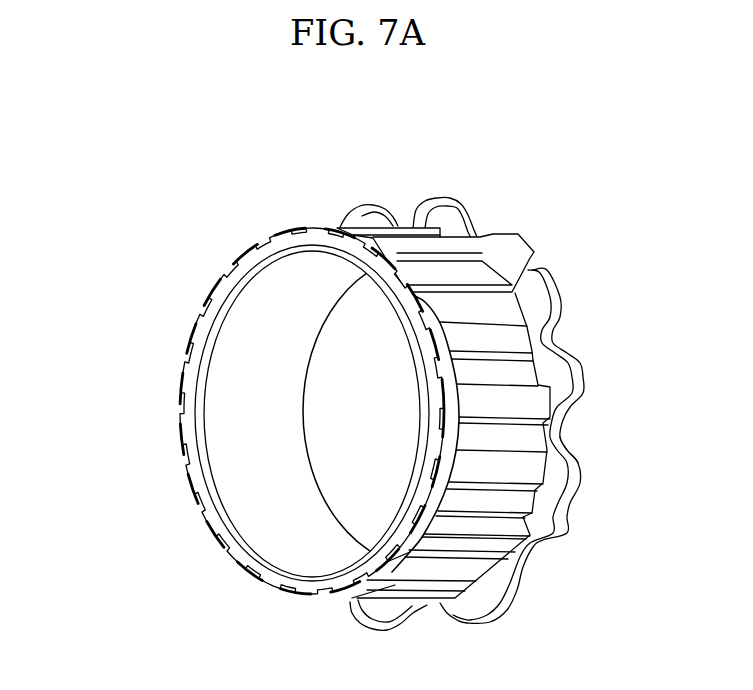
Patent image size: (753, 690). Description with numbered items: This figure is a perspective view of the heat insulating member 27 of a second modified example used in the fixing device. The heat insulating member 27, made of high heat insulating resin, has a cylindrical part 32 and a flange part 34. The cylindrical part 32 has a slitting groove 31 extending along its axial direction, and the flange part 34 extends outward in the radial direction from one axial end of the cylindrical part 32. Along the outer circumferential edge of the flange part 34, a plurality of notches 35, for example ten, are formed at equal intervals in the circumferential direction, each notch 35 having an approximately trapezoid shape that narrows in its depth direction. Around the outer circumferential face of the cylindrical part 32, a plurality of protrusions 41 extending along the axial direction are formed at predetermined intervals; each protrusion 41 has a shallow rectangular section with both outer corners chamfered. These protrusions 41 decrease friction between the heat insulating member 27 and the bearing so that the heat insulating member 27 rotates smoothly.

The heat insulating member 27 is at (385, 357).
The slitting groove 31 is at (540, 262).
The cylindrical part 32 is at (188, 382).
The flange part 34 is at (560, 375).
The notch 35 is at (560, 438).
The protrusion 41 is at (482, 523).